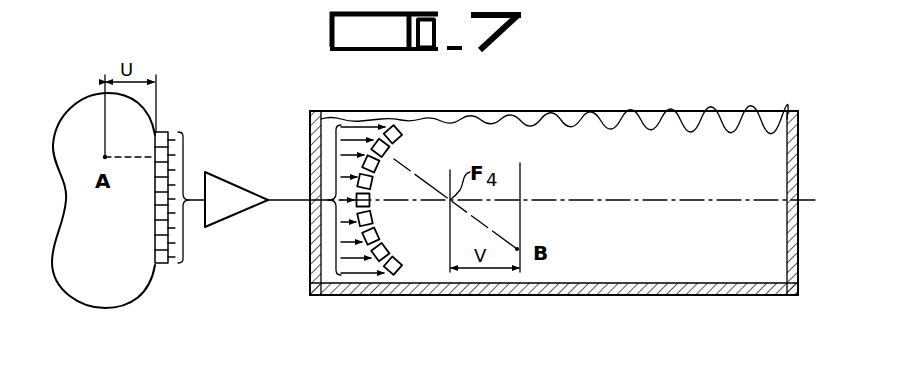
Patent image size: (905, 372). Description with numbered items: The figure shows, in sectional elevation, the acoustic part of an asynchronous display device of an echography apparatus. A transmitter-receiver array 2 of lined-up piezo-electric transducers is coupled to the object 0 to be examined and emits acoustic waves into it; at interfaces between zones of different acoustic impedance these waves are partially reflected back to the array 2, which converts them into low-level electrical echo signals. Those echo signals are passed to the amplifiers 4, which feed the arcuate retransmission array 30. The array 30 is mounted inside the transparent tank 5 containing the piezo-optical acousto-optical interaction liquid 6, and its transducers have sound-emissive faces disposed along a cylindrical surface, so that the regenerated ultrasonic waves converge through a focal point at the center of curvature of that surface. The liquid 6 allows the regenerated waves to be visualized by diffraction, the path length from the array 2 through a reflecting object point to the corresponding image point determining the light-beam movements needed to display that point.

The object 0 is at (88, 307).
The transmitter-receiver array 2 is at (160, 266).
The amplifiers 4 is at (235, 214).
The transparent tank 5 is at (608, 296).
The acousto-optical interaction liquid 6 is at (610, 119).
The arcuate retransmission array 30 is at (384, 231).